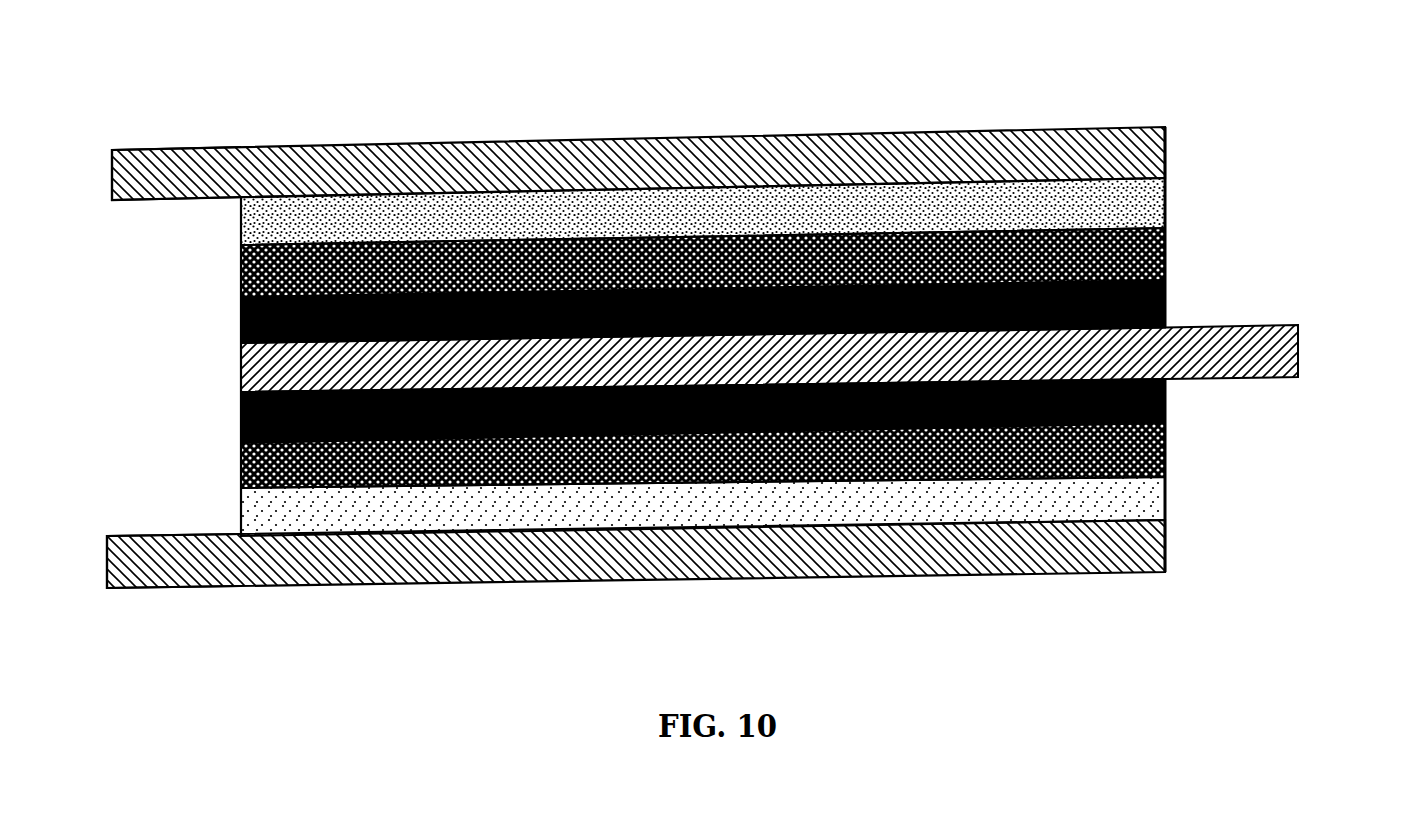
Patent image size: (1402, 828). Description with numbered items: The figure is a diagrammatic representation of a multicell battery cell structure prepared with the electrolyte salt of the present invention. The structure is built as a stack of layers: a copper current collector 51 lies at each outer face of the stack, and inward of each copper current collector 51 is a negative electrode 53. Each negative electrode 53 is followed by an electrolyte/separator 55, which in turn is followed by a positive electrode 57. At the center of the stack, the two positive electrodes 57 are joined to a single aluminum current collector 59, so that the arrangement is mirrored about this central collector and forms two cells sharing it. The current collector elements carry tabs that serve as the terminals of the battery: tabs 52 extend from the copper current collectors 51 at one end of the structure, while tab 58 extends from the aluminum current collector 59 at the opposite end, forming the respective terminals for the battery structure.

The copper current collector 51 is at (1170, 160).
The tab 52 is at (140, 150).
The negative electrode 53 is at (1150, 208).
The electrolyte/separator 55 is at (1170, 262).
The positive electrode 57 is at (238, 318).
The tab 58 is at (1300, 352).
The aluminum current collector 59 is at (238, 357).